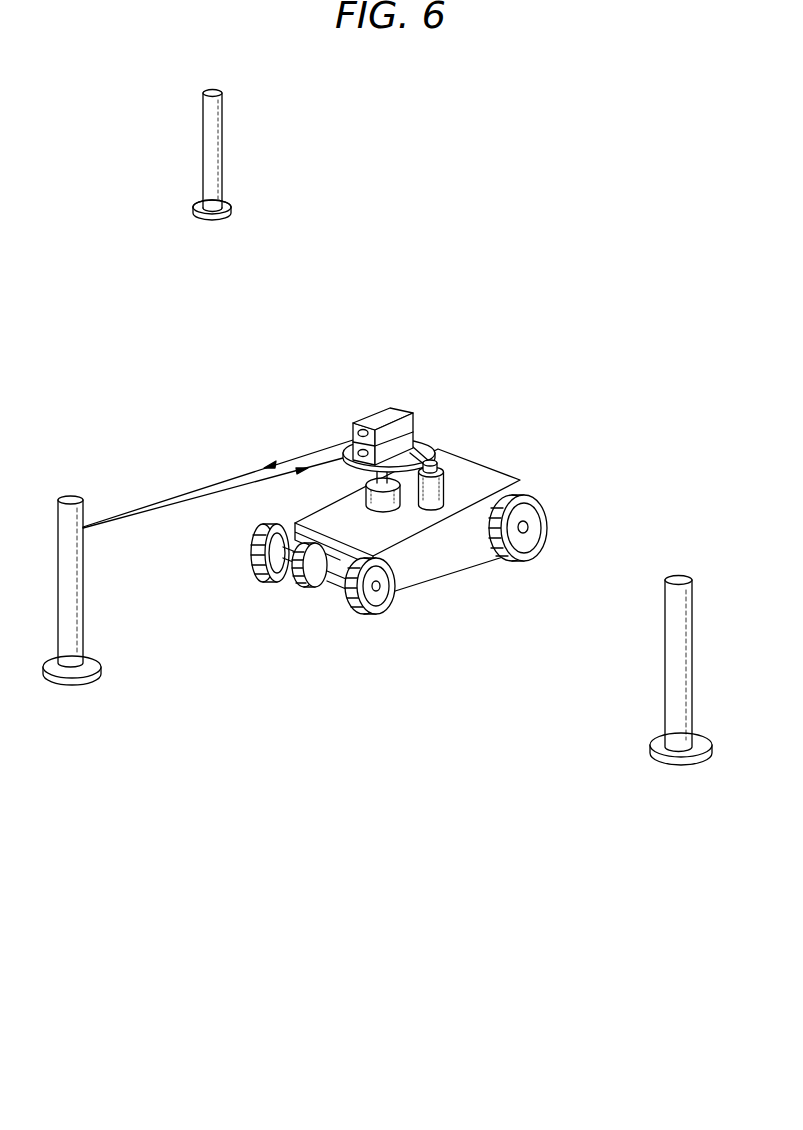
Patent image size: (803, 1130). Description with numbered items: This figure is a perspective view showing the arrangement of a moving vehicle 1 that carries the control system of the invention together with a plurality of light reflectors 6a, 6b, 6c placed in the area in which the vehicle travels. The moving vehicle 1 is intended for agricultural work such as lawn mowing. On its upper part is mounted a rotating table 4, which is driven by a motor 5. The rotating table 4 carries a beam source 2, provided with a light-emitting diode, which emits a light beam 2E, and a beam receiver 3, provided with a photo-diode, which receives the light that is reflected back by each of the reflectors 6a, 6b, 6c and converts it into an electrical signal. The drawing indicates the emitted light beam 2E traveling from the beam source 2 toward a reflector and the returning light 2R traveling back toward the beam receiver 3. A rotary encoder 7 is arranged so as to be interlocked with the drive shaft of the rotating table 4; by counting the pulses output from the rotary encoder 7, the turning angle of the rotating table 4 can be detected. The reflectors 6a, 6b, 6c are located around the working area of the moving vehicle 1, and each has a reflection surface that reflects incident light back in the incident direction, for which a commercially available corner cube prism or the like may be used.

The moving vehicle 1 is at (453, 567).
The beam source 2 is at (378, 413).
The light beam 2E is at (202, 487).
The reflected beam 2R is at (195, 498).
The beam receiver 3 is at (418, 448).
The rotating table 4 is at (430, 457).
The motor 5 is at (442, 485).
The reflector 6a is at (222, 128).
The reflector 6b is at (83, 603).
The reflector 6c is at (665, 628).
The rotary encoder 7 is at (367, 488).